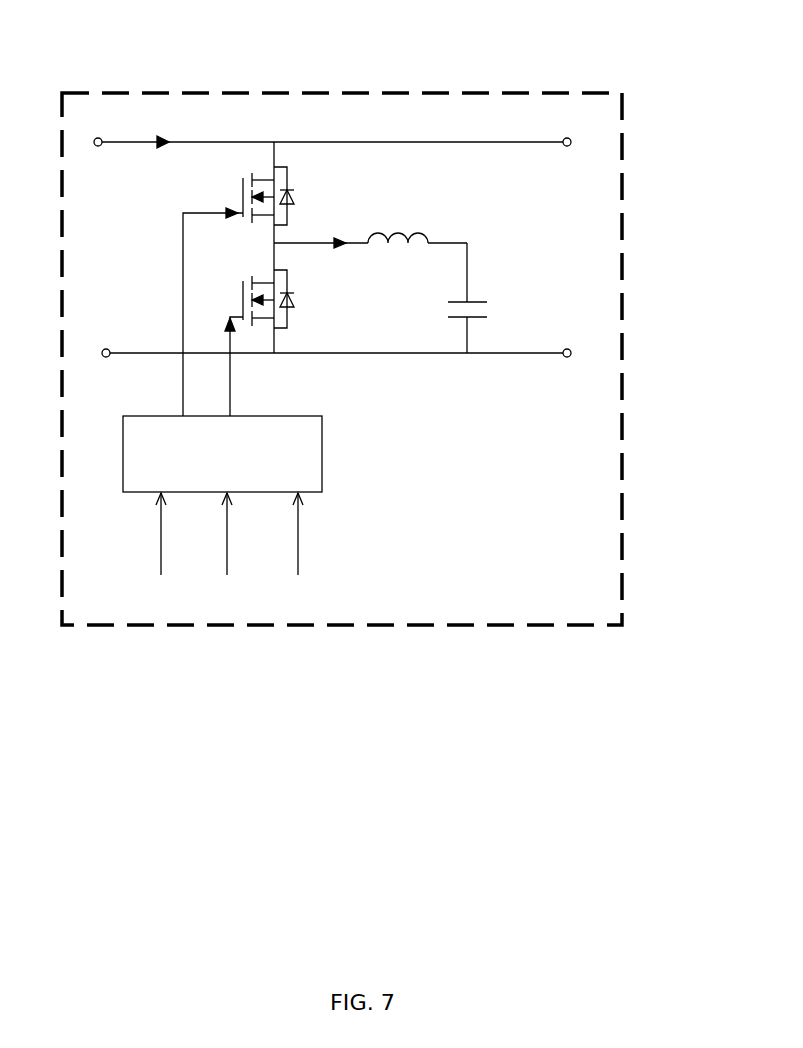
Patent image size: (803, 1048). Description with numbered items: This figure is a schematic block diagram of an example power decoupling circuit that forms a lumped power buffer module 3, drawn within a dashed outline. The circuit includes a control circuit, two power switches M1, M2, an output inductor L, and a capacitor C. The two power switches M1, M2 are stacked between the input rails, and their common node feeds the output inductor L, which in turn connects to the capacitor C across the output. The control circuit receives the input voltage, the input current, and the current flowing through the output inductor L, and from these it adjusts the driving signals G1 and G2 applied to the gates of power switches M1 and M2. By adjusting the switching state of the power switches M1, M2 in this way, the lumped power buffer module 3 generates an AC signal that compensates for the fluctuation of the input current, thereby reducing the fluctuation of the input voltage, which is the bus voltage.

The lumped power buffer module 3 is at (571, 93).
The power switch M1 is at (284, 196).
The power switch M2 is at (287, 299).
The driving signal G1 is at (213, 300).
The driving signal G2 is at (227, 352).
The output inductor L is at (398, 225).
The capacitor C is at (479, 308).